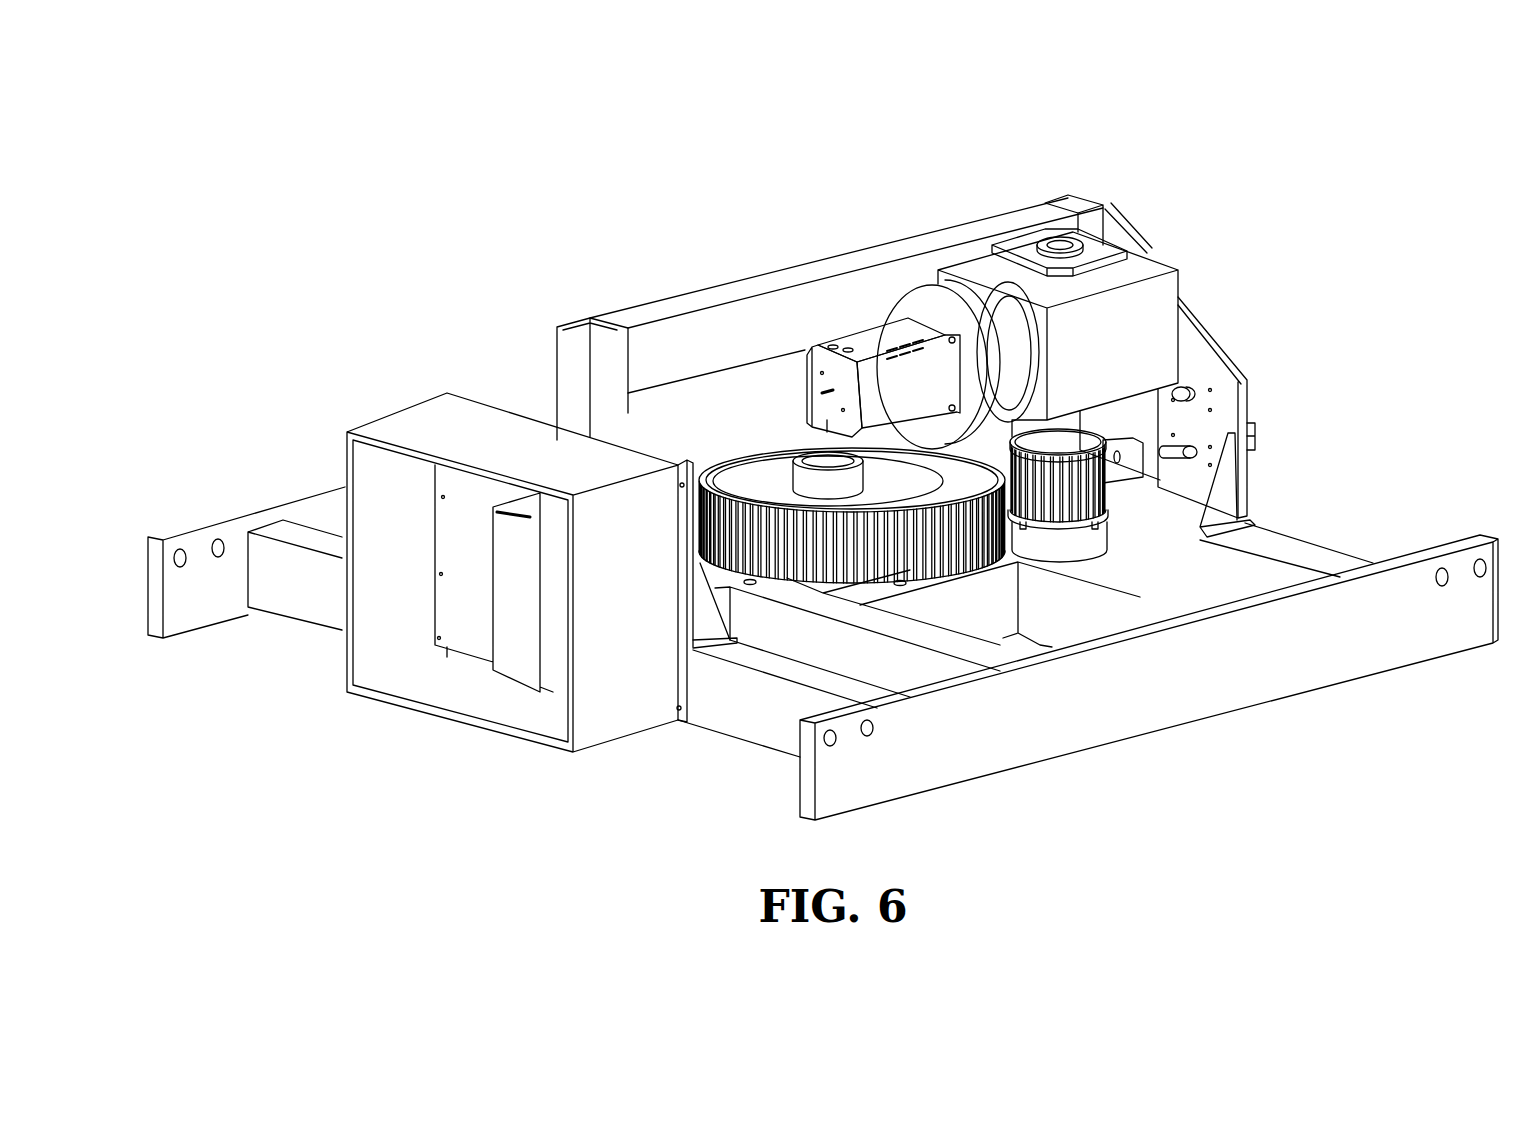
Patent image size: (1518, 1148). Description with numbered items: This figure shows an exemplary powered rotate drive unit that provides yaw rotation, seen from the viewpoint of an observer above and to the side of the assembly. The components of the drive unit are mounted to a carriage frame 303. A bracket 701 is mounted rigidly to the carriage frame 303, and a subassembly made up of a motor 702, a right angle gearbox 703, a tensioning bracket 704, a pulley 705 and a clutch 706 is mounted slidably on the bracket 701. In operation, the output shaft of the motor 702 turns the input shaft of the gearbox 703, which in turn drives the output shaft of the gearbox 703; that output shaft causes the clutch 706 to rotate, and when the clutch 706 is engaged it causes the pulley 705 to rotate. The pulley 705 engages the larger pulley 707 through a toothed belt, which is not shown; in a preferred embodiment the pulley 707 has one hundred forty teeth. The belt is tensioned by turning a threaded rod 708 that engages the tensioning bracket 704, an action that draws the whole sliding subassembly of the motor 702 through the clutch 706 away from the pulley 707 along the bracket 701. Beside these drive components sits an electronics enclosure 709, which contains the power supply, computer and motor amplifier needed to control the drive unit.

The carriage frame 303 is at (1062, 732).
The bracket 701 is at (703, 303).
The motor 702 is at (862, 340).
The right angle gearbox 703 is at (982, 262).
The tensioning bracket 704 is at (1147, 413).
The pulley 705 is at (1090, 485).
The clutch 706 is at (1107, 548).
The pulley 707 is at (723, 443).
The threaded rod 708 is at (1190, 448).
The electronics enclosure 709 is at (367, 422).